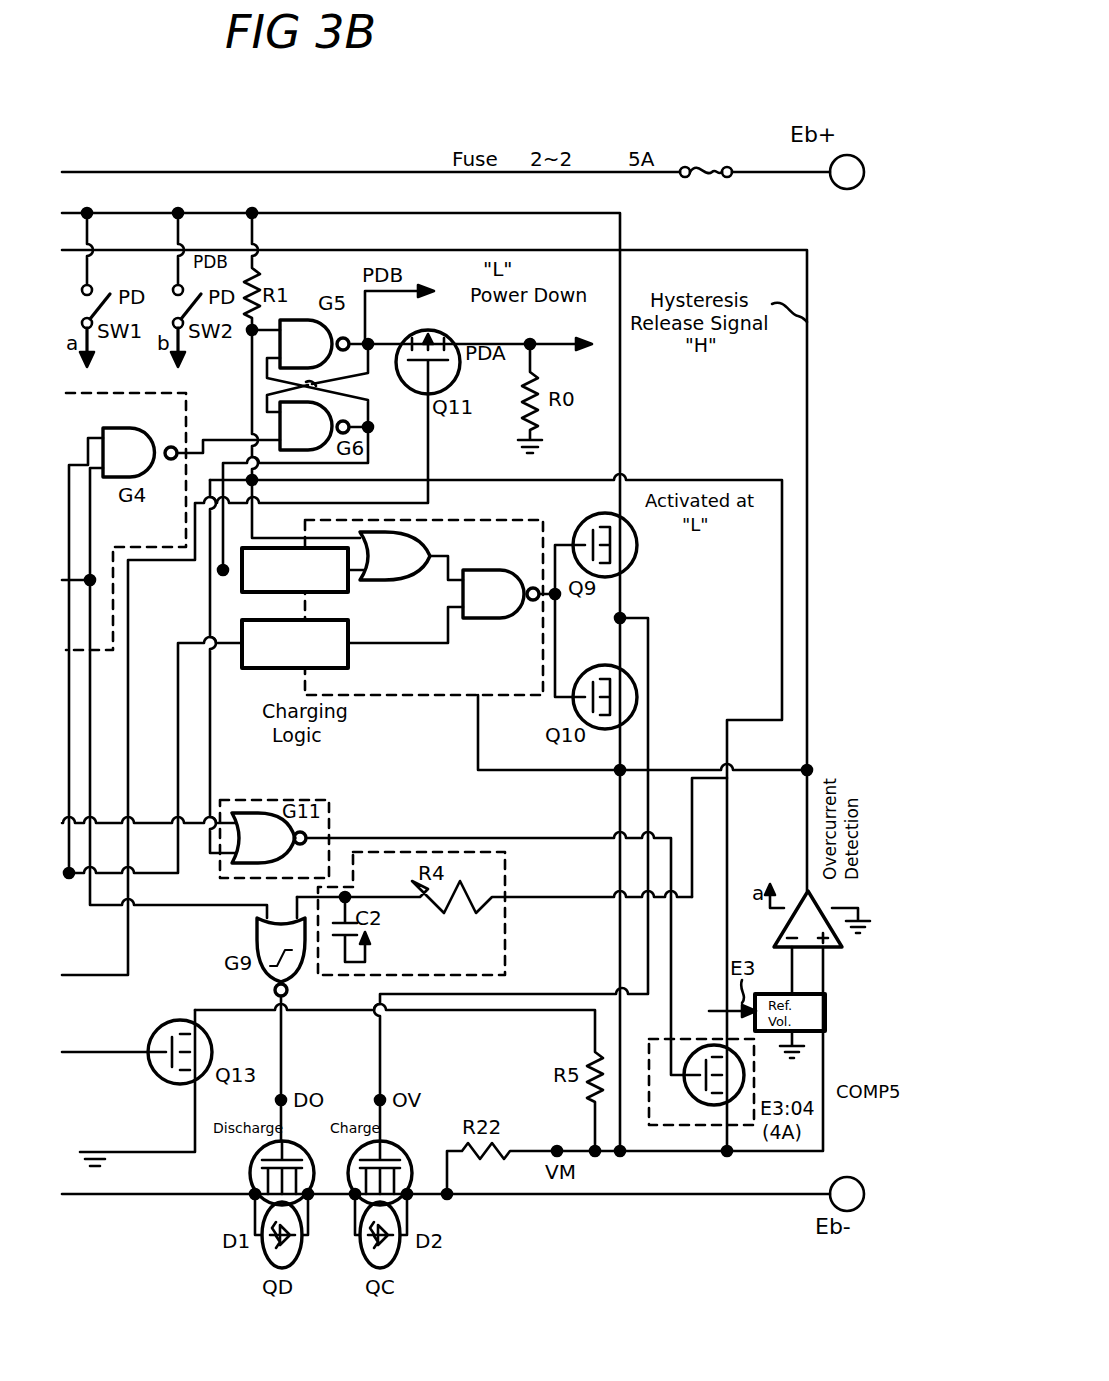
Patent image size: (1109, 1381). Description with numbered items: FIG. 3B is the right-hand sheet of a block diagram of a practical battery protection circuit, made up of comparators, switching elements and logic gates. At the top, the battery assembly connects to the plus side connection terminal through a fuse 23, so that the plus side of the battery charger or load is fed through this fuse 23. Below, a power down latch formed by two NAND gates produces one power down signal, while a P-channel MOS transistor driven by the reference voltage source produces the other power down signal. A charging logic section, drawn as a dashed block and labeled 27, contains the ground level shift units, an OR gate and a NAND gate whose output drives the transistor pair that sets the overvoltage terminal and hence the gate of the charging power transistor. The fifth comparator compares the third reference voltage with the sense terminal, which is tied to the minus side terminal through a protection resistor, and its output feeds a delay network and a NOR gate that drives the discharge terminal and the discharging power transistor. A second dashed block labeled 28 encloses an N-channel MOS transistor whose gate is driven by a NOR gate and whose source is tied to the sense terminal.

The fuse 23 is at (710, 166).
The charging logic 27 is at (398, 696).
The overcurrent detection transistor Q12 28 is at (688, 1039).